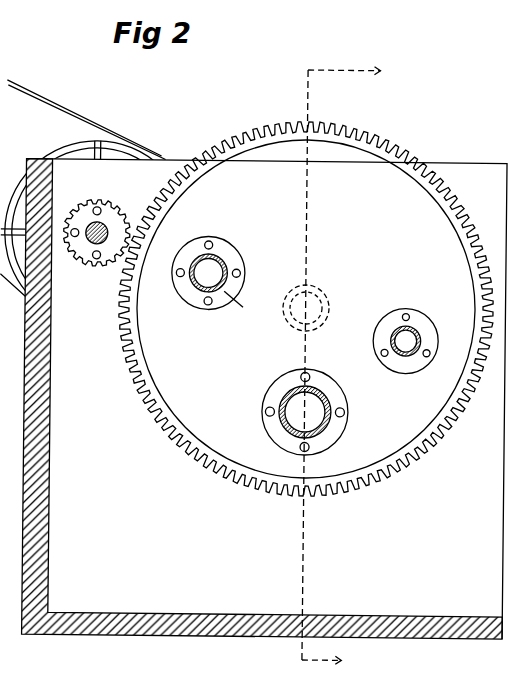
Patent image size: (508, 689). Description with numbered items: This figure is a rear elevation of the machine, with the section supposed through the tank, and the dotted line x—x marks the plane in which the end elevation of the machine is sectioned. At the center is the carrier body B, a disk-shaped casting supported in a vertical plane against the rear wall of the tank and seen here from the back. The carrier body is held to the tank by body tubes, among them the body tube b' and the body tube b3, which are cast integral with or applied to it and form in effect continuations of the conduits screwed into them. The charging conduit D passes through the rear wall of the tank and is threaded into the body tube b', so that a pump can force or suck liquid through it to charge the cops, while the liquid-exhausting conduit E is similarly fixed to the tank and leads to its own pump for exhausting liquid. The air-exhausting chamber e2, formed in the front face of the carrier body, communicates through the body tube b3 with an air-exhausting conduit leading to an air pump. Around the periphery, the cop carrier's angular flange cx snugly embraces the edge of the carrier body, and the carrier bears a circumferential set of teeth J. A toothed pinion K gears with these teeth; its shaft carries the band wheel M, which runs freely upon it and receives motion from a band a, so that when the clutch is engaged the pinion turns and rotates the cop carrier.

The belt a is at (50, 107).
The band wheel M is at (52, 161).
The toothed pinion K is at (117, 263).
The liquid-exhausting conduit E is at (211, 272).
The carrier body B is at (306, 305).
The circumferential set of teeth J is at (398, 143).
The peripheral angular flange cx is at (156, 404).
The body tube b' is at (311, 412).
The air-exhausting chamber e2 is at (420, 357).
The body tube b3 is at (407, 363).
The charging conduit D is at (311, 412).
The section line x is at (330, 363).